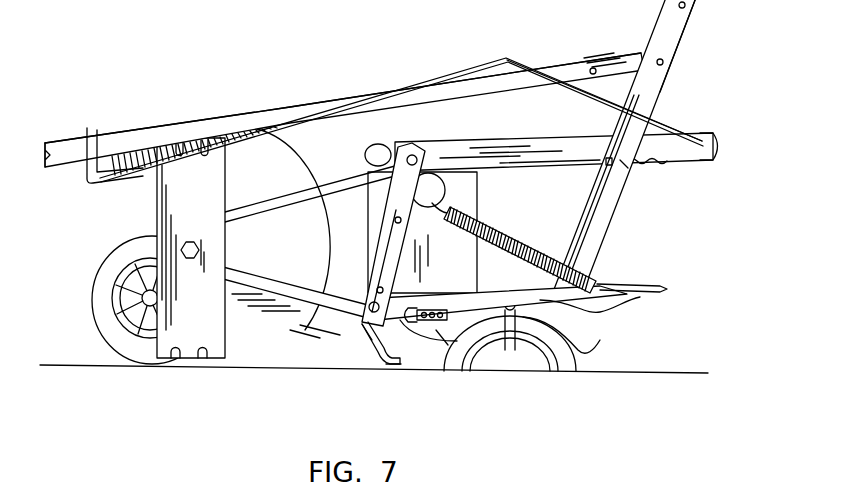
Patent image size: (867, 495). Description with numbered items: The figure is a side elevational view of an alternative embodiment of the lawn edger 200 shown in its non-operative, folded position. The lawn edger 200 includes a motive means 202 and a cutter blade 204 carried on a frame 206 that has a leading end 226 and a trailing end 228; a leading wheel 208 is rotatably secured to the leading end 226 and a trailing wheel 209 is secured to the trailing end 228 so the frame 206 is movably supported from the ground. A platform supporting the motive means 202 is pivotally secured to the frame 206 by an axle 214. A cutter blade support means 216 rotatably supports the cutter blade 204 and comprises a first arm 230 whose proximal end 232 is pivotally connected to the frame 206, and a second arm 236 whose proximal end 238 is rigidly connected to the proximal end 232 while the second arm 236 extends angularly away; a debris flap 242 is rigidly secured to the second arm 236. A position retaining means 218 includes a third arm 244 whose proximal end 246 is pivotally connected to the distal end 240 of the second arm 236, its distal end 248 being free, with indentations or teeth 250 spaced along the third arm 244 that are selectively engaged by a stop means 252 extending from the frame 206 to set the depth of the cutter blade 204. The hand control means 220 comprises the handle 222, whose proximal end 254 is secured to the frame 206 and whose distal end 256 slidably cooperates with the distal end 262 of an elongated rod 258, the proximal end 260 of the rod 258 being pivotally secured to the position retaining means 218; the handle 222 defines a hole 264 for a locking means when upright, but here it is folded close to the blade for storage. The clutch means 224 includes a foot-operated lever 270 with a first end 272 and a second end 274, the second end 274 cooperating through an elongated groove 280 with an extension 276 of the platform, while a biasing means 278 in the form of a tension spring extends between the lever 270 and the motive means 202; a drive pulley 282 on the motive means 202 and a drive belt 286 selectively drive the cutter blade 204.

The lawn edger 200 is at (417, 60).
The motive means 202 is at (385, 150).
The cutter blade 204 is at (193, 330).
The frame 206 is at (598, 190).
The leading wheel 208 is at (120, 242).
The trailing wheel 209 is at (577, 355).
The axle 214 is at (383, 366).
The cutter blade support means 216 is at (305, 340).
The position retaining means 218 is at (639, 180).
The hand control means 220 is at (103, 124).
The handle 222 is at (250, 118).
The clutch means 224 is at (448, 355).
The leading end 226 is at (130, 312).
The trailing end 228 is at (567, 250).
The first arm 230 is at (290, 330).
The proximal end 232 is at (362, 330).
The second arm 236 is at (380, 177).
The proximal end 238 is at (340, 345).
The distal end 240 is at (405, 148).
The debris flap 242 is at (387, 372).
The third arm 244 is at (512, 155).
The proximal end 246 is at (492, 155).
The distal end 248 is at (712, 150).
The indentations or teeth 250 is at (652, 162).
The stop means 252 is at (613, 167).
The proximal end 254 is at (664, 62).
The distal end 256 is at (67, 150).
The elongated rod 258 is at (600, 104).
The proximal end 260 is at (660, 118).
The distal end 262 is at (72, 178).
The hole 264 is at (591, 68).
The foot-operated lever 270 is at (592, 312).
The first end 272 is at (640, 285).
The second end 274 is at (443, 293).
The extension 276 is at (400, 320).
The biasing means 278 is at (510, 243).
The elongated groove 280 is at (455, 375).
The drive pulley 282 is at (447, 212).
The drive belt 286 is at (366, 153).